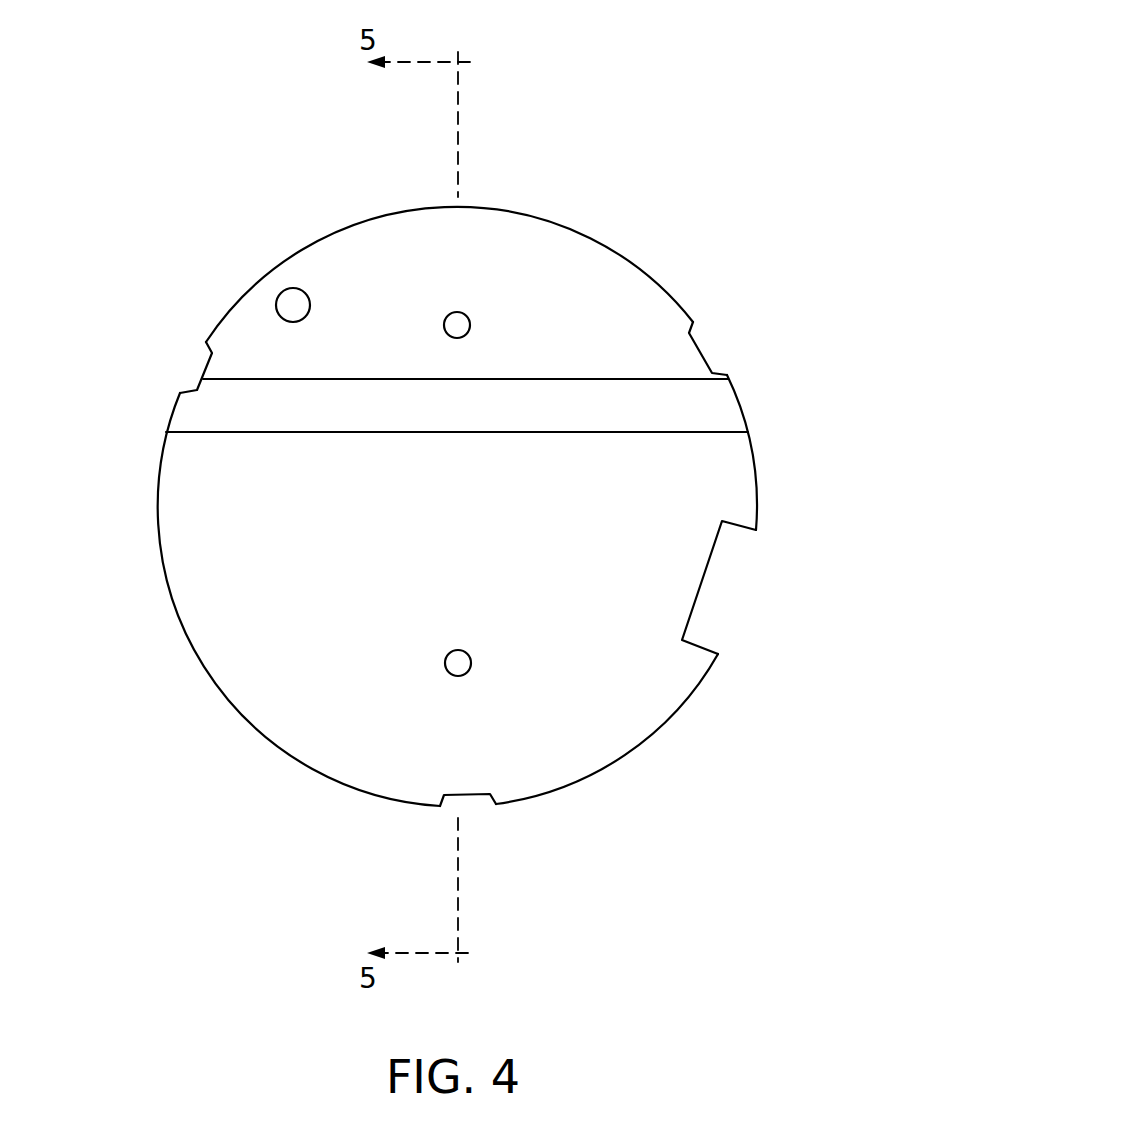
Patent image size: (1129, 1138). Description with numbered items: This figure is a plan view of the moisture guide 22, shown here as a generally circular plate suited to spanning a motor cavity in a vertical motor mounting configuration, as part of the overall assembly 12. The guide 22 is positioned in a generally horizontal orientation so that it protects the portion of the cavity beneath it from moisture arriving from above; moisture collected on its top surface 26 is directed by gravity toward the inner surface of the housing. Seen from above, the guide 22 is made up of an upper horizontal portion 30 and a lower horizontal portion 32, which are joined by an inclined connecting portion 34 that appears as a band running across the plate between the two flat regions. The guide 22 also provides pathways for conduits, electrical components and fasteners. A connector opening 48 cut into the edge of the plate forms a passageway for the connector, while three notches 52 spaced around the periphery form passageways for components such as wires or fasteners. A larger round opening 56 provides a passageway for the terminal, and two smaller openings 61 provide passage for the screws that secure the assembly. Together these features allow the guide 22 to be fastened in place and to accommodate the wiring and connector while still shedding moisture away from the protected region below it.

The lid assembly 12 is at (727, 70).
The moisture guide 22 is at (638, 188).
The top surface 26 is at (537, 272).
The upper horizontal portion 30 is at (394, 733).
The lower horizontal portion 32 is at (600, 309).
The inclined connecting portion 34 is at (740, 402).
The connector opening 48 is at (745, 555).
The notches 52 is at (203, 372).
The opening 56 is at (286, 290).
The openings 61 is at (452, 313).